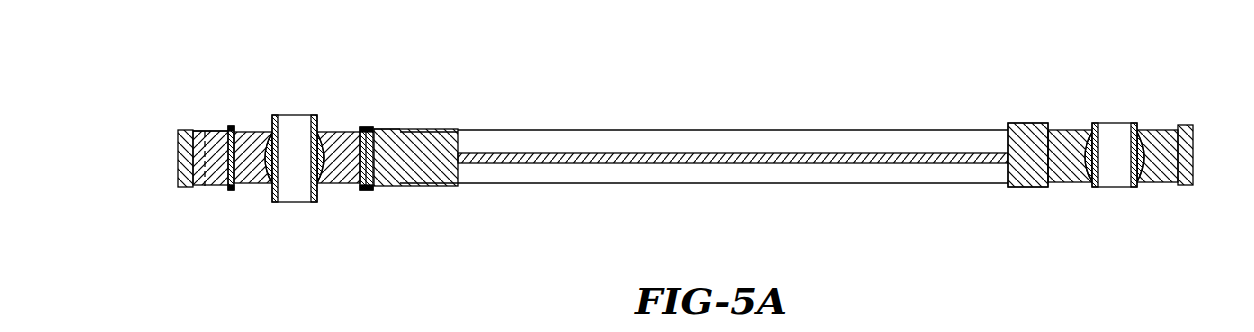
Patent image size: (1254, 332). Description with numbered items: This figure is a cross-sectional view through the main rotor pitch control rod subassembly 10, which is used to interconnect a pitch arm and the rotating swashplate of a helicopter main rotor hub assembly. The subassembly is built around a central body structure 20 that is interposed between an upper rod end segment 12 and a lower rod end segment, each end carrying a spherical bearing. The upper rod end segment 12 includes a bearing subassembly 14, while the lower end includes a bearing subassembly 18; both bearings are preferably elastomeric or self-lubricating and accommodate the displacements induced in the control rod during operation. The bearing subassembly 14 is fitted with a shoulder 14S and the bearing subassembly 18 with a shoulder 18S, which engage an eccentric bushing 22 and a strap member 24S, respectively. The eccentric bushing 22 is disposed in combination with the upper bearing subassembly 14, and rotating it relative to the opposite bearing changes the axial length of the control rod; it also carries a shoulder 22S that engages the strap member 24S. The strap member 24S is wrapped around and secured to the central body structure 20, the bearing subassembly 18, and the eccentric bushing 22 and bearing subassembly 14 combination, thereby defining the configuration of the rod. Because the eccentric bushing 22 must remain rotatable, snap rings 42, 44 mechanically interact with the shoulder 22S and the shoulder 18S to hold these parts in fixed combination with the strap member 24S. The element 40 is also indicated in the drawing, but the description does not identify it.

The main rotor pitch control rod subassembly 10 is at (772, 113).
The upper rod end segment 12 is at (317, 240).
The bearing subassembly 14 is at (303, 114).
The shoulder 14S is at (224, 128).
The bearing subassembly 18 is at (1120, 120).
The shoulder 18S is at (1043, 125).
The central body structure 20 is at (573, 140).
The eccentric bushing 22 is at (203, 186).
The shoulder 22S is at (192, 188).
The strap member 24S is at (178, 185).
The bore 40 is at (205, 130).
The snap ring 42 is at (195, 132).
The snap ring 44 is at (1045, 187).